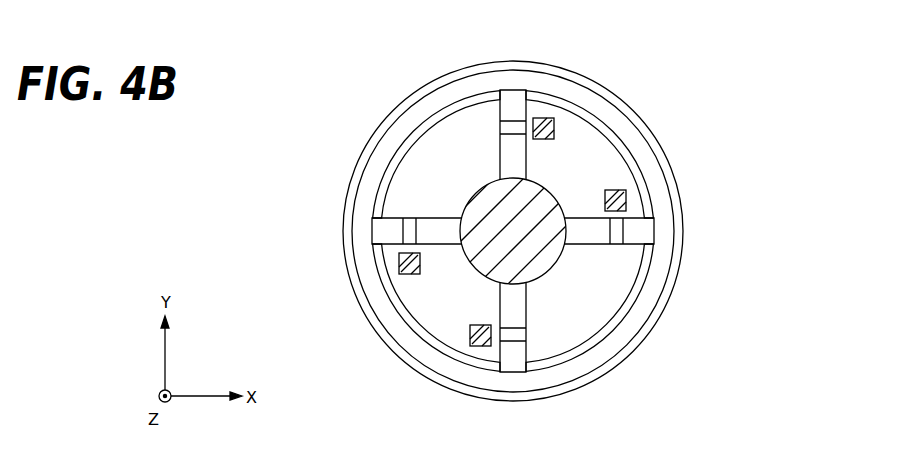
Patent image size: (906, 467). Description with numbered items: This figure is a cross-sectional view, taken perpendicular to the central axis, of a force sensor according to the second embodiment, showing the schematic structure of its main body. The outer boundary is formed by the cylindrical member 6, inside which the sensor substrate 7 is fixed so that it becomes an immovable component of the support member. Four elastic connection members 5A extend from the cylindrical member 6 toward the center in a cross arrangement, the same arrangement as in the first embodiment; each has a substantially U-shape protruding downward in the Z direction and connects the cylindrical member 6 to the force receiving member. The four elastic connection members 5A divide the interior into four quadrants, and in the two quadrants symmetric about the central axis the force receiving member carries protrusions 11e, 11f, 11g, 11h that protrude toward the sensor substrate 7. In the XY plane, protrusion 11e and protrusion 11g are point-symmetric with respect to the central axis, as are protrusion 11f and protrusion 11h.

The elastic connection member 5A is at (437, 230).
The cylindrical member 6 is at (355, 200).
The sensor substrate 7 is at (550, 345).
The protrusion 11e is at (538, 118).
The protrusion 11f is at (626, 195).
The protrusion 11g is at (483, 346).
The protrusion 11h is at (397, 265).